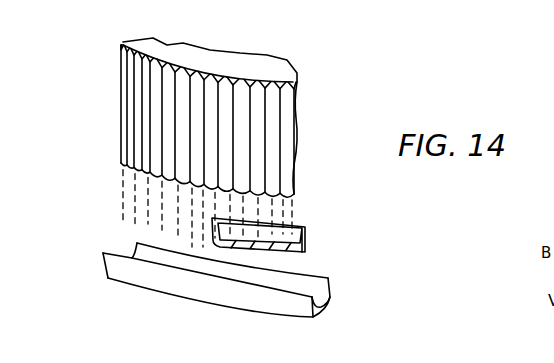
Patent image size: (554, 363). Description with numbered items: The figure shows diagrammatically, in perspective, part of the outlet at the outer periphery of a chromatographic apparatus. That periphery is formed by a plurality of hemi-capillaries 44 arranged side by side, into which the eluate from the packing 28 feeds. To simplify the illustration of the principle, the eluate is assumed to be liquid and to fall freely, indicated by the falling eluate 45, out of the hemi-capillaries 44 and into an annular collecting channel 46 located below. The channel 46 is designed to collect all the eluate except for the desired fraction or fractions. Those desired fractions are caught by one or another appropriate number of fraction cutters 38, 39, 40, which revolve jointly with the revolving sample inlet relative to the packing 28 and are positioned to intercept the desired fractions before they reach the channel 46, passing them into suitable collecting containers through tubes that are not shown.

The packing 28 is at (223, 65).
The hemi-capillaries 44 is at (257, 153).
The freely falling eluate 45 is at (156, 180).
The fraction cutter 38 is at (330, 232).
The fraction cutter 39 is at (258, 235).
The fraction cutter 40 is at (305, 246).
The annular collecting channel 46 is at (135, 278).